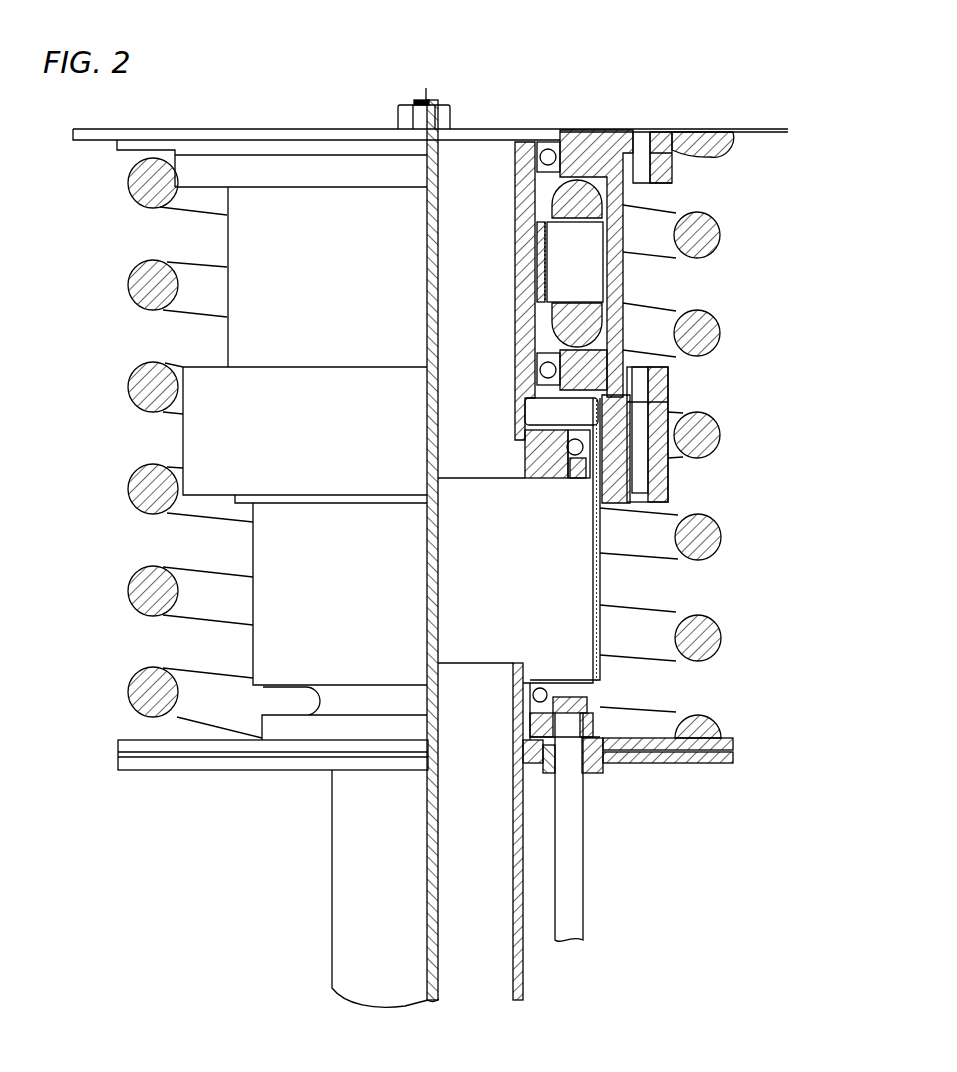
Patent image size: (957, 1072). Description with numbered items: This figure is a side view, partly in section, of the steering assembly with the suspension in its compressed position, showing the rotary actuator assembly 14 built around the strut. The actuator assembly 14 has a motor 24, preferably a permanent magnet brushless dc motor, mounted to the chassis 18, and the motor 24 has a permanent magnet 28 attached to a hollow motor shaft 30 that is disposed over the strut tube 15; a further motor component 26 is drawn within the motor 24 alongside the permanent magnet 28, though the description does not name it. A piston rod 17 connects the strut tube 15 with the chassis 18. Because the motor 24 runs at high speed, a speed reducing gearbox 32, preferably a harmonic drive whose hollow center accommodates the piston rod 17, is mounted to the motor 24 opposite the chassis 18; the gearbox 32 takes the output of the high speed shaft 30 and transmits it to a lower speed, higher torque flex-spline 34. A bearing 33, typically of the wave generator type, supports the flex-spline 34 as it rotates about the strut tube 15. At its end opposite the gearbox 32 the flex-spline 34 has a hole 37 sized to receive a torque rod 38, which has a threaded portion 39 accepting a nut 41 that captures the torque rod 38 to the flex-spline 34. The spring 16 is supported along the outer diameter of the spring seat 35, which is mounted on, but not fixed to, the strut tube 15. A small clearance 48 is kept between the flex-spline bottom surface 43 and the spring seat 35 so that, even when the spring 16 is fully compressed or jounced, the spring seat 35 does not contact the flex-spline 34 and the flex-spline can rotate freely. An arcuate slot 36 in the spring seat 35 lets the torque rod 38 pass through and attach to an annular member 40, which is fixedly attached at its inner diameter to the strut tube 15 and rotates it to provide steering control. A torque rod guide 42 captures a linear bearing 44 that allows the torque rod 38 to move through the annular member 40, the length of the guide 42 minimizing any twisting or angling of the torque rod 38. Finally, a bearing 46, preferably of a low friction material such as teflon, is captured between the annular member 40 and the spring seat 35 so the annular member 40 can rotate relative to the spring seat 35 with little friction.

The rotary actuator assembly 14 is at (742, 378).
The strut tube 15 is at (252, 335).
The spring 16 is at (728, 212).
The piston rod 17 is at (442, 167).
The chassis 18 is at (588, 129).
The motor 24 is at (623, 280).
The magnet 26 is at (562, 293).
The permanent magnet 28 is at (527, 240).
The hollow motor shaft 30 is at (533, 262).
The speed reducing gearbox 32 is at (668, 473).
The bearing 33 is at (577, 457).
The flex-spline 34 is at (600, 587).
The spring seat 35 is at (140, 740).
The arcuate slot 36 is at (580, 697).
The hole 37 is at (608, 716).
The torque rod 38 is at (583, 850).
The threaded portion 39 is at (563, 690).
The annular member 40 is at (367, 763).
The nut 41 is at (545, 690).
The torque rod guide 42 is at (603, 772).
The flex-spline bottom surface 43 is at (534, 747).
The linear bearing 44 is at (538, 777).
The bearing 46 is at (370, 755).
The clearance 48 is at (605, 738).